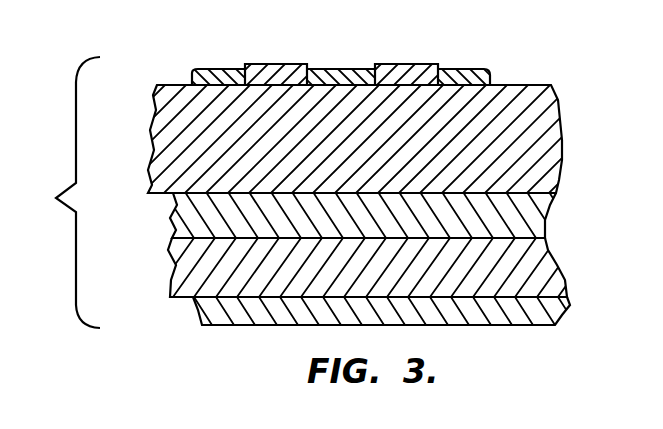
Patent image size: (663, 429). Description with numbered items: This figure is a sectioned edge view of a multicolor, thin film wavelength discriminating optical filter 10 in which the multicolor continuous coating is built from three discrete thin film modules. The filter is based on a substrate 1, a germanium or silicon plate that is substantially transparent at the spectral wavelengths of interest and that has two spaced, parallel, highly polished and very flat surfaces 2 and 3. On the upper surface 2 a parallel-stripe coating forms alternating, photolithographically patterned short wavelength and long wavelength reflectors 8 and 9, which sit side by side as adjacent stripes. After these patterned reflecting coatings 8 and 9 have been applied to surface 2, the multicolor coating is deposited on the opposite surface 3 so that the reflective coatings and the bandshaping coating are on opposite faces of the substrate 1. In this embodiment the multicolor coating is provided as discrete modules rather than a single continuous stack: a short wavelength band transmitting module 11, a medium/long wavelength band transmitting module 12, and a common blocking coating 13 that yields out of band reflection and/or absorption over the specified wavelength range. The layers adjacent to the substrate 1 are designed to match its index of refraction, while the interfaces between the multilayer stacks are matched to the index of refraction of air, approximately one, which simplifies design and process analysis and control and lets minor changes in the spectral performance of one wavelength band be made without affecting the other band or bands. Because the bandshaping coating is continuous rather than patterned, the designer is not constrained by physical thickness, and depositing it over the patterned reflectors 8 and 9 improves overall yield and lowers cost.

The multicolor thin film wavelength discriminating optical filter 10 is at (34, 188).
The substrate 1 is at (563, 145).
The surface 2 is at (541, 84).
The surface 3 is at (168, 200).
The short wavelength reflector 8 is at (215, 68).
The long wavelength reflector 9 is at (278, 63).
The short wavelength band transmitting module 11 is at (543, 213).
The medium/long wavelength band transmitting module 12 is at (548, 262).
The common blocking coating 13 is at (550, 308).